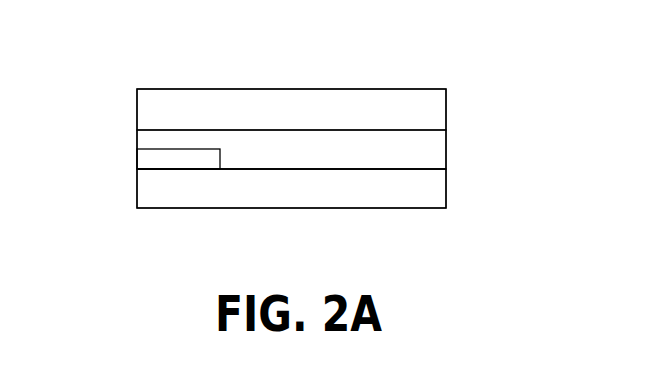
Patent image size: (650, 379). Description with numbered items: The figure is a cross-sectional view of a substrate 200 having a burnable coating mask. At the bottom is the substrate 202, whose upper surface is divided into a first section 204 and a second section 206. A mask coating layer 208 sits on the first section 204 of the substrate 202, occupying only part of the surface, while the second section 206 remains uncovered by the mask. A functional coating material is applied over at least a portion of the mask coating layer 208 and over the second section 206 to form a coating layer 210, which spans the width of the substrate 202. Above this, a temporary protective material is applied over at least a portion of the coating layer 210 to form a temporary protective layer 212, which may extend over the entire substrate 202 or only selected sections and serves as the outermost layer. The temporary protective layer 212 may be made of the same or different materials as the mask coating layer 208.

The substrate having a burnable coating mask 200 is at (516, 35).
The substrate 202 is at (432, 195).
The first section 204 is at (148, 169).
The second section 206 is at (428, 169).
The mask coating layer 208 is at (172, 153).
The coating layer 210 is at (435, 142).
The temporary protective layer 212 is at (435, 108).